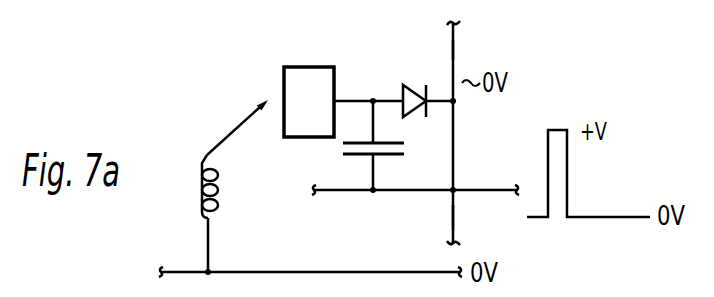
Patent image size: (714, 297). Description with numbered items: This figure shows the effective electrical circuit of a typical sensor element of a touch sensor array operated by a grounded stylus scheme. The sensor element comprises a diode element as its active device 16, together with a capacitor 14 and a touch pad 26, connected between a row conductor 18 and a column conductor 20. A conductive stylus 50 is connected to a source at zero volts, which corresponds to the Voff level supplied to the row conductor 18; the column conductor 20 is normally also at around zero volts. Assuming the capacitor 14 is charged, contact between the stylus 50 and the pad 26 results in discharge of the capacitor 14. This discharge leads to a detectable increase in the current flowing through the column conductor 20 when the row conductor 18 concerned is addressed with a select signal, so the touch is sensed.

The capacitor 14 is at (393, 162).
The active device 16 is at (416, 83).
The row conductor 18 is at (453, 218).
The column conductor 20 is at (453, 49).
The pad 26 is at (321, 116).
The conductive stylus 50 is at (237, 130).